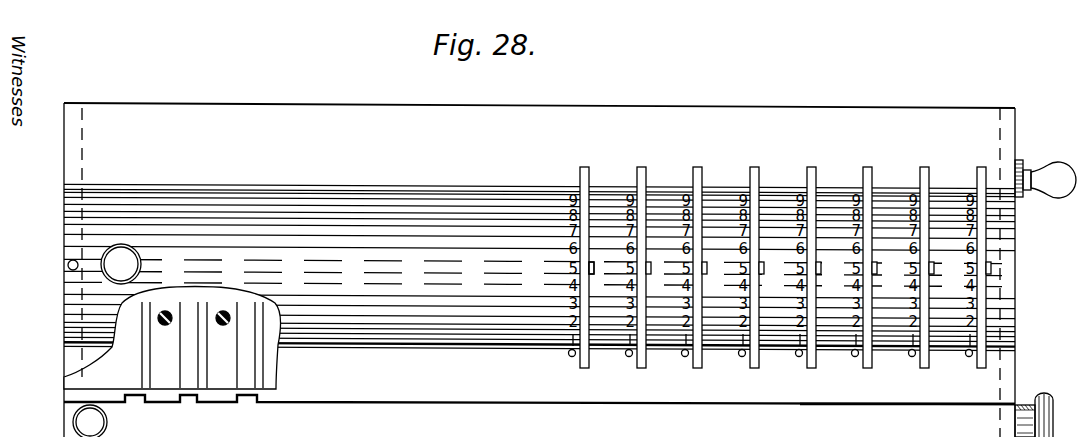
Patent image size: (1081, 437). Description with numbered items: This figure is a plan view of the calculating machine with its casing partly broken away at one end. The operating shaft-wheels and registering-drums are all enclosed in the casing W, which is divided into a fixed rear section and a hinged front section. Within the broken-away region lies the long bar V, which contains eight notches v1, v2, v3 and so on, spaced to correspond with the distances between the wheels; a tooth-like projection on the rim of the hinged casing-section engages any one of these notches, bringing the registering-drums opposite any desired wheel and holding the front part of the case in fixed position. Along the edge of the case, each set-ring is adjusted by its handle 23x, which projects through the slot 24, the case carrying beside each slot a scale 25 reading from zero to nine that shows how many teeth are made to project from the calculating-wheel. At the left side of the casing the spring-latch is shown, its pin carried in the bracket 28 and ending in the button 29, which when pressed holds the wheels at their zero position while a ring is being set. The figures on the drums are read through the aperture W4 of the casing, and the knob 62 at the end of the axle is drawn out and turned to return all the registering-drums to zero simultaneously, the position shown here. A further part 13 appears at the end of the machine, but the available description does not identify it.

The operating handle 13 is at (1045, 171).
The slot 24 is at (755, 368).
The scale 25 is at (568, 355).
The handle 23x is at (918, 266).
The bracket 28 is at (82, 273).
The button 29 is at (121, 264).
The knob 62 is at (1061, 387).
The long bar V is at (67, 395).
The notch v1 is at (172, 353).
The notch v2 is at (188, 407).
The notch v3 is at (247, 407).
The casing W is at (1030, 235).
The aperture W4 is at (836, 422).